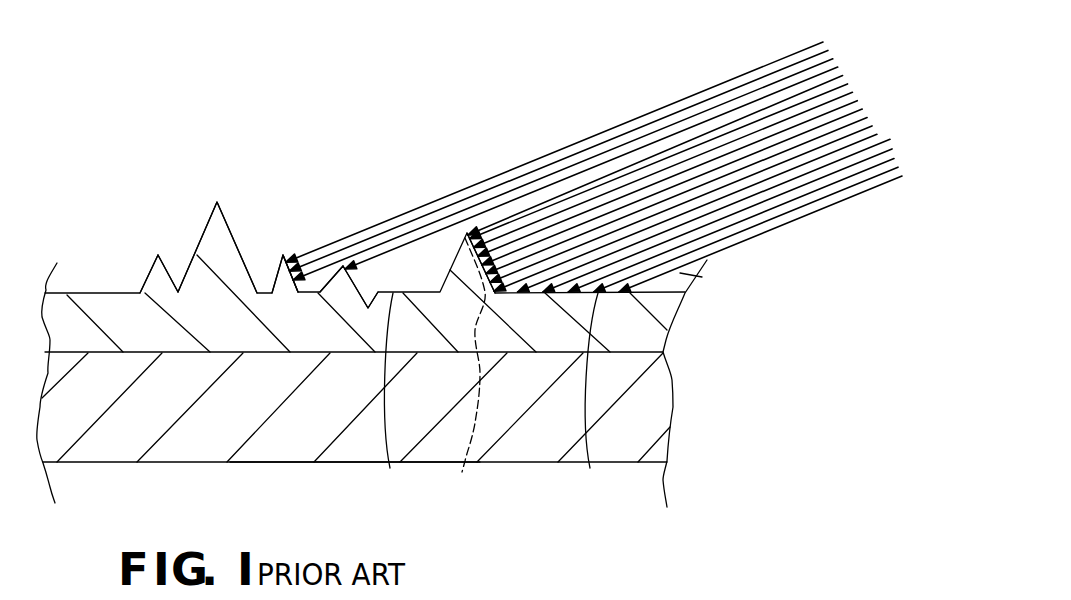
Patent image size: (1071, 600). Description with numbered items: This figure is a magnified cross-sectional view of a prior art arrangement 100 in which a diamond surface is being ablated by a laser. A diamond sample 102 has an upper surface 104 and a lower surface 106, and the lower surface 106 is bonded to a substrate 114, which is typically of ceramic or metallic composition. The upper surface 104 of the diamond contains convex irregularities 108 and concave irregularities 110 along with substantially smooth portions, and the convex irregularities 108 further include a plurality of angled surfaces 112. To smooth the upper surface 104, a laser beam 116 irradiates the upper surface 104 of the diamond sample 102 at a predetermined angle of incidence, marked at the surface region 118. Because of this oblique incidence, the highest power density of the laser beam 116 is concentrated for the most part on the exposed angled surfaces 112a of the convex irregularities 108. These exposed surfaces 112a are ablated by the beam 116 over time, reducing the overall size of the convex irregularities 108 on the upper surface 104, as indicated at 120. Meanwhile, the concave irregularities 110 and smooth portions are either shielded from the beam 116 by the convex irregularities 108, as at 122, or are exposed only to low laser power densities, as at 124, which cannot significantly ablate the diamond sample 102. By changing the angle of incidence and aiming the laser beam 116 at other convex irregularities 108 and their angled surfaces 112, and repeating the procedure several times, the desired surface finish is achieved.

The prior art optical device 100 is at (352, 84).
The diamond sample 102 is at (82, 322).
The upper surface 104 is at (117, 292).
The lower surface 106 is at (102, 353).
The convex irregularities 108 is at (212, 213).
The concave irregularities 110 is at (178, 287).
The angled surfaces 112 is at (150, 272).
The exposed angled surfaces 112a is at (299, 256).
The substrate 114 is at (273, 433).
The laser beam 116 is at (735, 163).
The flat surface portion 118 is at (697, 288).
The reduced convex irregularity size indication 120 is at (465, 370).
The shielded region 122 is at (383, 398).
The low power density region 124 is at (590, 398).